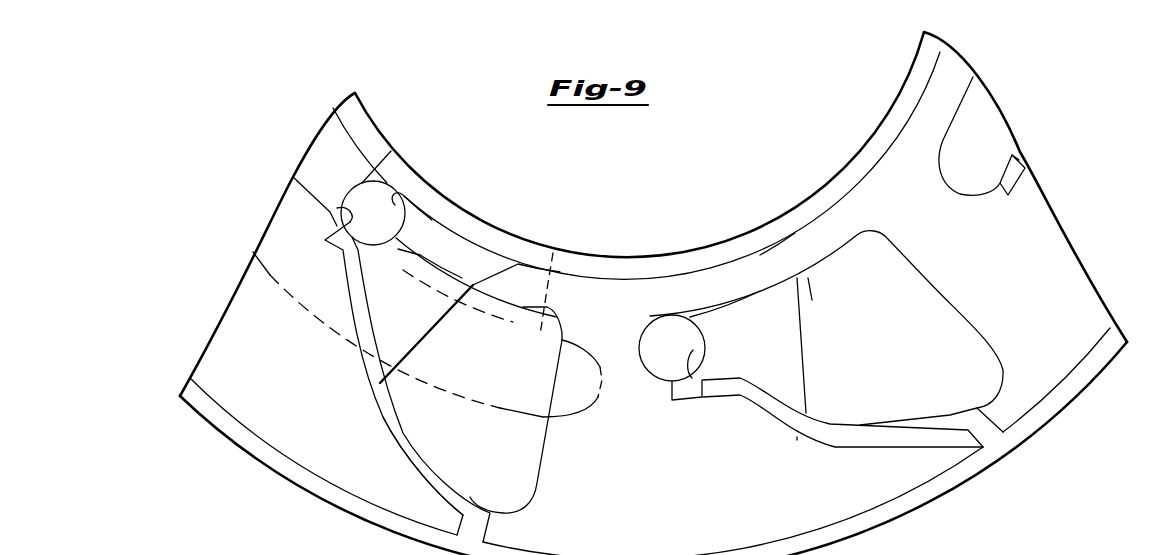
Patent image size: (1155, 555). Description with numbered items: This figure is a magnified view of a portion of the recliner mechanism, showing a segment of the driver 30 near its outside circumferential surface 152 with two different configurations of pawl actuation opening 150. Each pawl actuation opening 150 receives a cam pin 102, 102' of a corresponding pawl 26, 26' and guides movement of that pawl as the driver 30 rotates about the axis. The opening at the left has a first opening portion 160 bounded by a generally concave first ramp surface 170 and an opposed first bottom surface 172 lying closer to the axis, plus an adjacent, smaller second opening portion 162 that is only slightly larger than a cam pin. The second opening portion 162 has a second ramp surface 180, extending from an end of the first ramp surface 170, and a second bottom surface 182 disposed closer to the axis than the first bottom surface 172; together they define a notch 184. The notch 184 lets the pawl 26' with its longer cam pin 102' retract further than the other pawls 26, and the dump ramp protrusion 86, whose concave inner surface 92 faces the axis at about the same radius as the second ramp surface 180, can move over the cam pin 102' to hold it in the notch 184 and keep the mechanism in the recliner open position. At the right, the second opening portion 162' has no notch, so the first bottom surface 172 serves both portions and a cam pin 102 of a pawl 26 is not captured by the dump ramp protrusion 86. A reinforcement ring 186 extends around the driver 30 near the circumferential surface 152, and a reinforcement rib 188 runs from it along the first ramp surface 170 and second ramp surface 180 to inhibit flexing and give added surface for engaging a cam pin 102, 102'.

The driver 30 is at (310, 494).
The outside circumferential surface 152 is at (646, 441).
The pawl 26 is at (837, 262).
The pawl 26' is at (470, 323).
The dump ramp protrusion 86 is at (271, 284).
The inner surface 92 is at (553, 253).
The cam pin 102 is at (672, 348).
The cam pin 102' is at (373, 213).
The pawl actuation opening 150 is at (520, 458).
The first opening portion 160 is at (435, 288).
The second opening portion 162 is at (460, 197).
The second opening portion 162' is at (721, 249).
The first ramp surface 170 is at (430, 463).
The first bottom surface 172 is at (523, 307).
The second ramp surface 180 is at (337, 208).
The second bottom surface 182 is at (395, 205).
The notch 184 is at (406, 246).
The reinforcement ring 186 is at (607, 554).
The reinforcement rib 188 is at (395, 450).